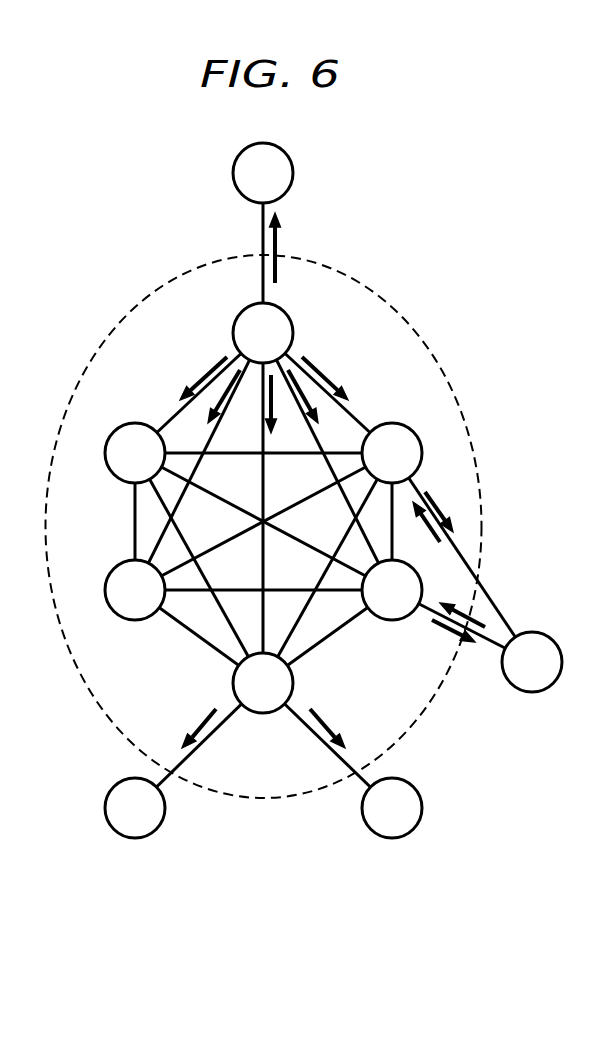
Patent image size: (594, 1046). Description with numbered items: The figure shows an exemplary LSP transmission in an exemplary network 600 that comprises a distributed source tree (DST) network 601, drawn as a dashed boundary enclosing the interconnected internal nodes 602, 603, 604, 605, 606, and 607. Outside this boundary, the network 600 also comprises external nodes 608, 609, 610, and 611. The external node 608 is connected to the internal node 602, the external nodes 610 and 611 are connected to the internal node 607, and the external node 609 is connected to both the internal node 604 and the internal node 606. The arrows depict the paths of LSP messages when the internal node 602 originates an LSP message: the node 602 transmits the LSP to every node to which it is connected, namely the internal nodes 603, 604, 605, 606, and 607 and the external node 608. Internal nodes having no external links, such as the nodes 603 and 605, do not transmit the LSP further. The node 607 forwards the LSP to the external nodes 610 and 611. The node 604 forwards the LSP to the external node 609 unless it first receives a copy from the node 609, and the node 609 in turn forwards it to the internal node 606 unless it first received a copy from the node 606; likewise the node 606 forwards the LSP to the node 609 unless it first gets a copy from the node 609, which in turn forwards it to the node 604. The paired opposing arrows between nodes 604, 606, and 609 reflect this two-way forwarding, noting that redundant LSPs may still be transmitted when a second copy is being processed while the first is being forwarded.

The network 600 is at (281, 124).
The distributed source tree (DST) network 601 is at (385, 300).
The internal node 602 is at (294, 333).
The internal node 603 is at (135, 423).
The internal node 604 is at (392, 423).
The internal node 605 is at (135, 620).
The internal node 606 is at (392, 620).
The internal node 607 is at (263, 713).
The external node 608 is at (294, 173).
The external node 609 is at (532, 692).
The external node 610 is at (135, 838).
The external node 611 is at (392, 838).